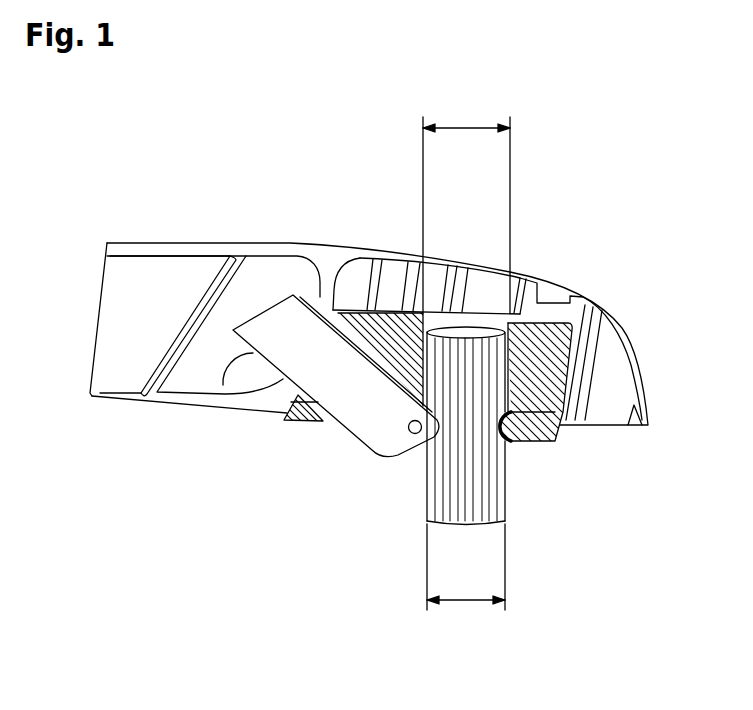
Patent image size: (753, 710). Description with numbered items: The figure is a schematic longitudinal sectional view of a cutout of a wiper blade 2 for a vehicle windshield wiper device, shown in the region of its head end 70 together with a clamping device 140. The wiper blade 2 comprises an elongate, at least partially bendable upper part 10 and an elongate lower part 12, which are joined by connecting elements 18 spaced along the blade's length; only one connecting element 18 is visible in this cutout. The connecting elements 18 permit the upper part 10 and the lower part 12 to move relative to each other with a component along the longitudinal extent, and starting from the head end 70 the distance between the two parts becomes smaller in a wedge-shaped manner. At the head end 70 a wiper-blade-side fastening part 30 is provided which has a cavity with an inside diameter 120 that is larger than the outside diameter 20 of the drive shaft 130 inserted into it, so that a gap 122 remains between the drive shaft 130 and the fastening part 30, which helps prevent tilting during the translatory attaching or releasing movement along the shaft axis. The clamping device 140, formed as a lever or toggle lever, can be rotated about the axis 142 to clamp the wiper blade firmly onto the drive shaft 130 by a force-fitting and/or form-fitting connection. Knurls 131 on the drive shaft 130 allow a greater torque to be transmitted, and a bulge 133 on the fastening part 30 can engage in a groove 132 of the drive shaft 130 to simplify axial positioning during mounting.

The wiper blade 2 is at (78, 232).
The upper part 10 is at (144, 250).
The lower part 12 is at (100, 400).
The connecting element 18 is at (178, 336).
The outside diameter 20 is at (520, 505).
The wiper-blade-side fastening part 30 is at (300, 423).
The head end 70 is at (446, 238).
The inside diameter 120 is at (468, 126).
The gap 122 is at (523, 447).
The drive shaft 130 is at (507, 503).
The knurls 131 is at (470, 512).
The groove 132 is at (520, 427).
The bulge 133 is at (516, 450).
The clamping device 140 is at (223, 385).
The axis 142 is at (409, 433).